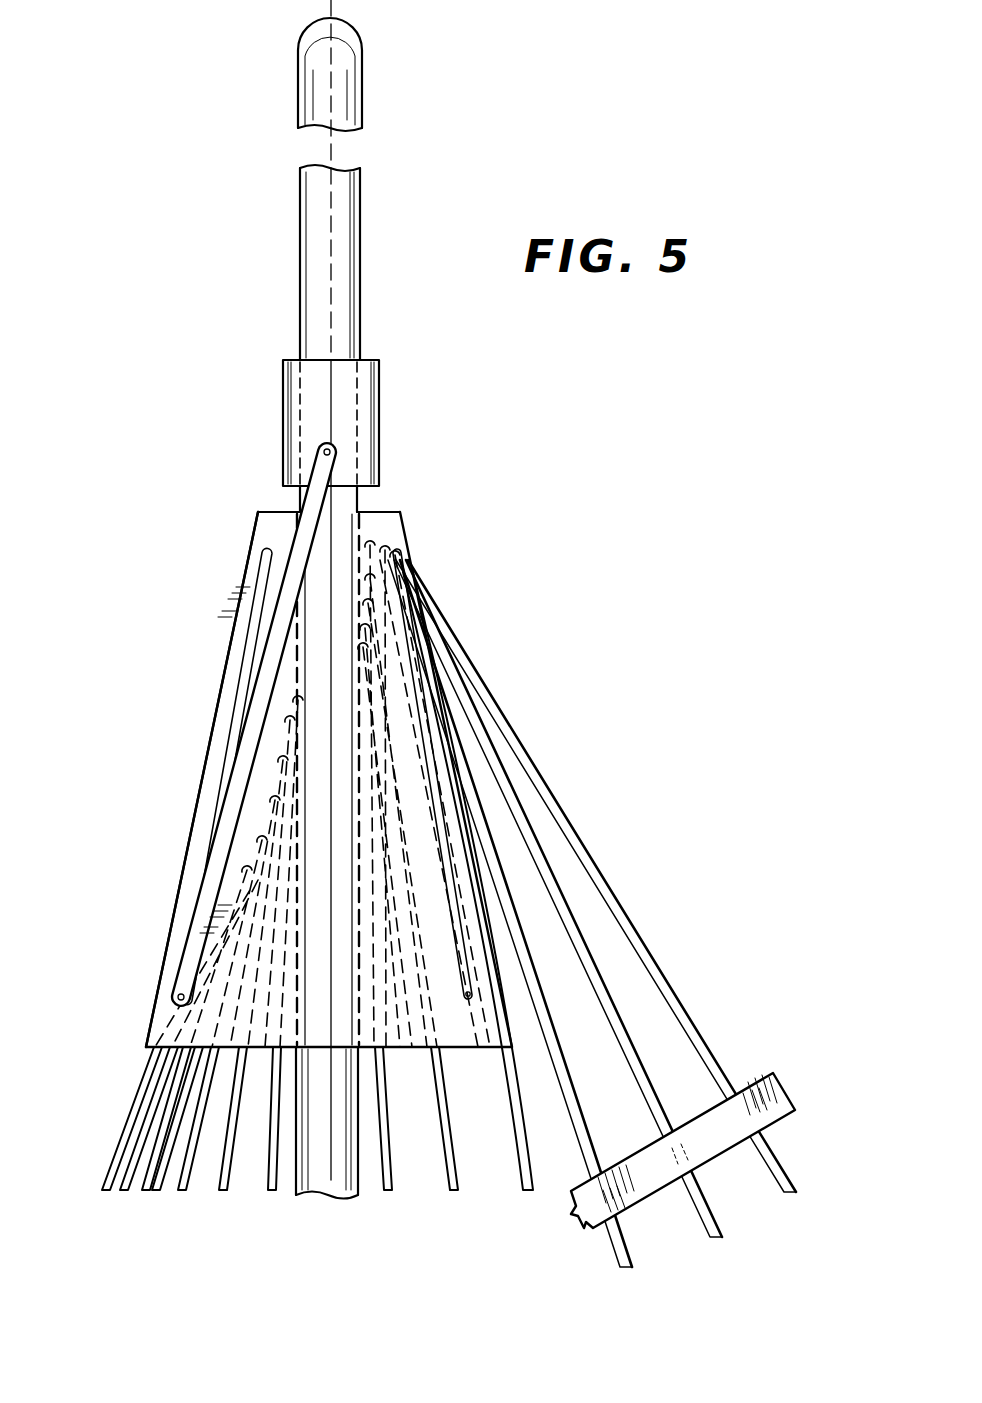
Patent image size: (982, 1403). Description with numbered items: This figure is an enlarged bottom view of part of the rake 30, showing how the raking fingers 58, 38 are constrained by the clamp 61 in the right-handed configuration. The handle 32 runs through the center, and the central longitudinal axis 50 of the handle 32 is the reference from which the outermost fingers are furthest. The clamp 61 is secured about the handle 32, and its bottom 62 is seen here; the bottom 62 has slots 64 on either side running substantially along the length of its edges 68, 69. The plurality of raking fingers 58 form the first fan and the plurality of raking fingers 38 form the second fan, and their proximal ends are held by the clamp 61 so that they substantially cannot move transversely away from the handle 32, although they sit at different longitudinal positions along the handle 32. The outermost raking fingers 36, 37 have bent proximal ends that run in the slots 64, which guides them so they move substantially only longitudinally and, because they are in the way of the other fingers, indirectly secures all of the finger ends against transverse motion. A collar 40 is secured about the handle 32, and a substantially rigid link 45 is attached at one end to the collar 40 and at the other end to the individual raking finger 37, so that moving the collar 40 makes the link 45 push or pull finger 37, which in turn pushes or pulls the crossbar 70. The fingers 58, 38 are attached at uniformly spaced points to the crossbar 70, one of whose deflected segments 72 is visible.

The rake 30 is at (223, 250).
The handle 32 is at (362, 316).
The central longitudinal axis 50 is at (330, 222).
The collar 40 is at (283, 405).
The link 45 is at (291, 545).
The clamp 61 is at (429, 557).
The bottom of clamp 62 is at (215, 720).
The slots 64 is at (259, 592).
The edge of clamp bottom 68 is at (163, 957).
The edge of clamp bottom 69 is at (490, 928).
The raking finger 36 is at (630, 929).
The raking finger 37 is at (127, 1139).
The raking fingers 38 is at (177, 1195).
The raking fingers 58 is at (519, 1188).
The crossbar 70 is at (785, 1076).
The crossbar segment 72 is at (788, 1125).